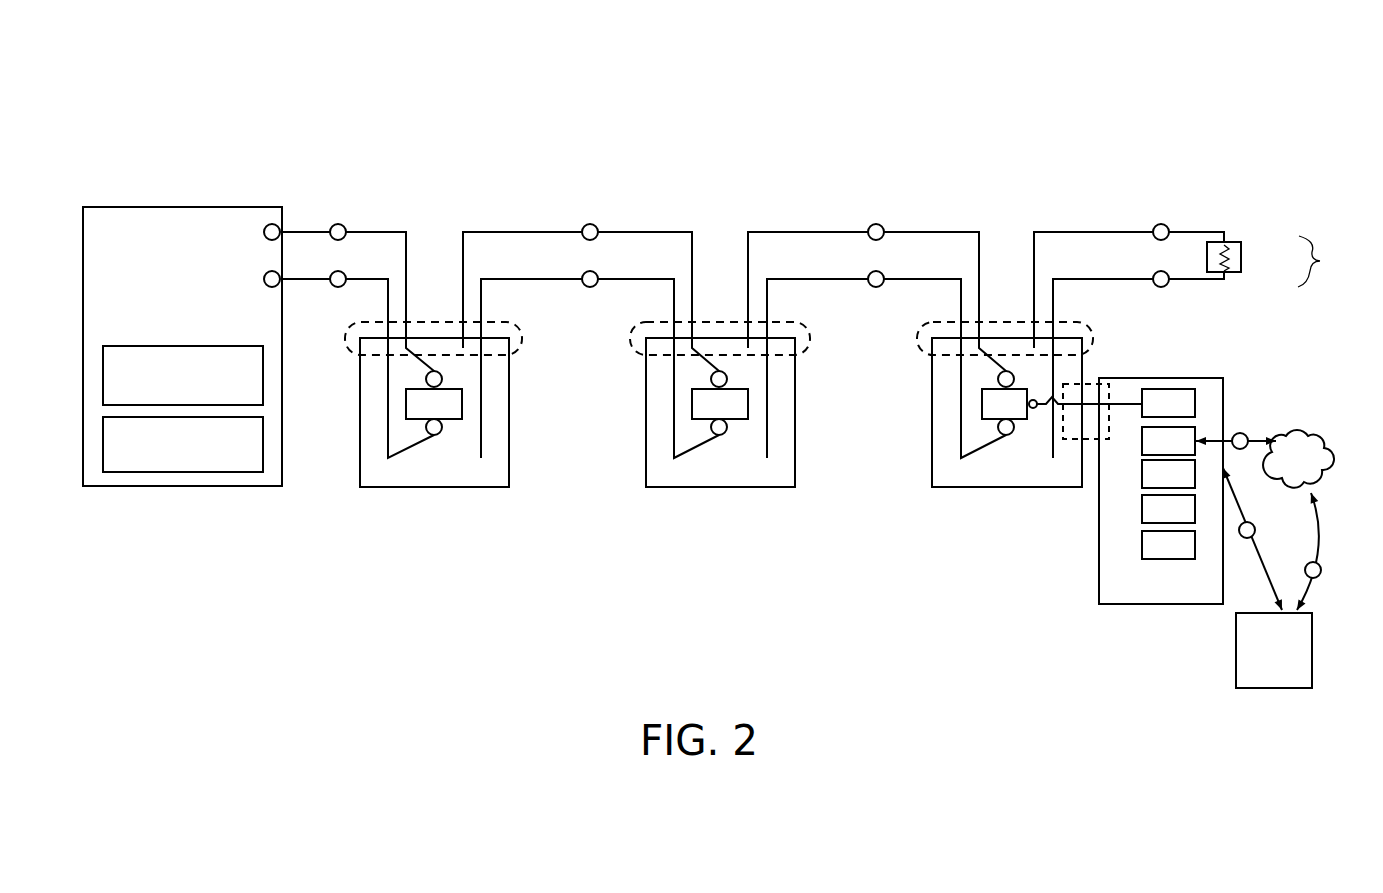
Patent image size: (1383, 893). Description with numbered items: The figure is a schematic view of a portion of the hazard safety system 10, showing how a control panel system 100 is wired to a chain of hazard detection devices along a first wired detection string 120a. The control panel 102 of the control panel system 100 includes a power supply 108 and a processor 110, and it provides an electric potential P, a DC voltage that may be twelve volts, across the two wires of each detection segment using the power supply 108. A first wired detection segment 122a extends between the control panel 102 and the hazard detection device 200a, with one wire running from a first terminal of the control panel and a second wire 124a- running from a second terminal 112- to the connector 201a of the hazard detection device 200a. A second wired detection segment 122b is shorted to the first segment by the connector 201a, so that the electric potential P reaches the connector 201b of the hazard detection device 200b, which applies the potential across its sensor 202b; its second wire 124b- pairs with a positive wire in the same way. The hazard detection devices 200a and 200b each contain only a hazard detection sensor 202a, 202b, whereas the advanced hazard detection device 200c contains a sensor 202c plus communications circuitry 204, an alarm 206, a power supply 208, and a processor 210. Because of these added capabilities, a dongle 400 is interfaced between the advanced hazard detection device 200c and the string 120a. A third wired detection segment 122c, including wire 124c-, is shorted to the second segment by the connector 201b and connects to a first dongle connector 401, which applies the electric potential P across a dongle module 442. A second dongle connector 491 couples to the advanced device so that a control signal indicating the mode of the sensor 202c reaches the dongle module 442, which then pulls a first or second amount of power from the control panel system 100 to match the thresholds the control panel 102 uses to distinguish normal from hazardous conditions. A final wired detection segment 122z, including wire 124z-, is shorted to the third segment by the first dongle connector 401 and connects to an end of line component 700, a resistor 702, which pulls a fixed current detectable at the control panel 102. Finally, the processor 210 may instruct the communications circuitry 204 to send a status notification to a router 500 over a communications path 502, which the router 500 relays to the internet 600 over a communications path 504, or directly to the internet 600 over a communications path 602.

The control panel system 100 is at (258, 66).
The hazard safety system 10 is at (683, 658).
The control panel 102 is at (198, 330).
The processor 110 is at (202, 402).
The power supply 108 is at (202, 469).
The second terminal 112- is at (266, 285).
The electric potential P is at (283, 234).
The wired detection segment 122a is at (310, 190).
The wired detection segment 122b is at (562, 190).
The wired detection segment 122c is at (852, 190).
The final wired detection segment 122z is at (1133, 190).
The second wire 124a- is at (334, 285).
The wire 124b- is at (590, 287).
The wire 124c- is at (876, 287).
The wire 124z- is at (1165, 286).
The hazard detection device 200a is at (460, 481).
The hazard detection device 200b is at (747, 481).
The advanced hazard detection device 200c is at (1195, 597).
The hazard detection sensor 202a is at (457, 416).
The hazard detection sensor 202b is at (743, 416).
The hazard detection sensor 202c is at (1191, 414).
The connector 201a is at (524, 345).
The connector 201b is at (811, 345).
The dongle 400 is at (1027, 481).
The first dongle connector 401 is at (1098, 333).
The dongle module 442 is at (1021, 416).
The second dongle connector 491 is at (1092, 446).
The communications circuitry 204 is at (1185, 452).
The power supply 208 is at (1185, 485).
The alarm 206 is at (1185, 520).
The processor 210 is at (1185, 556).
The router 500 is at (1295, 658).
The communications path 502 is at (1245, 538).
The communications path 504 is at (1306, 567).
The internet 600 is at (1315, 473).
The communications path 602 is at (1238, 433).
The end of line component 700 is at (1241, 247).
The resistor 702 is at (1233, 266).
The first wired detection string 120a is at (1327, 277).